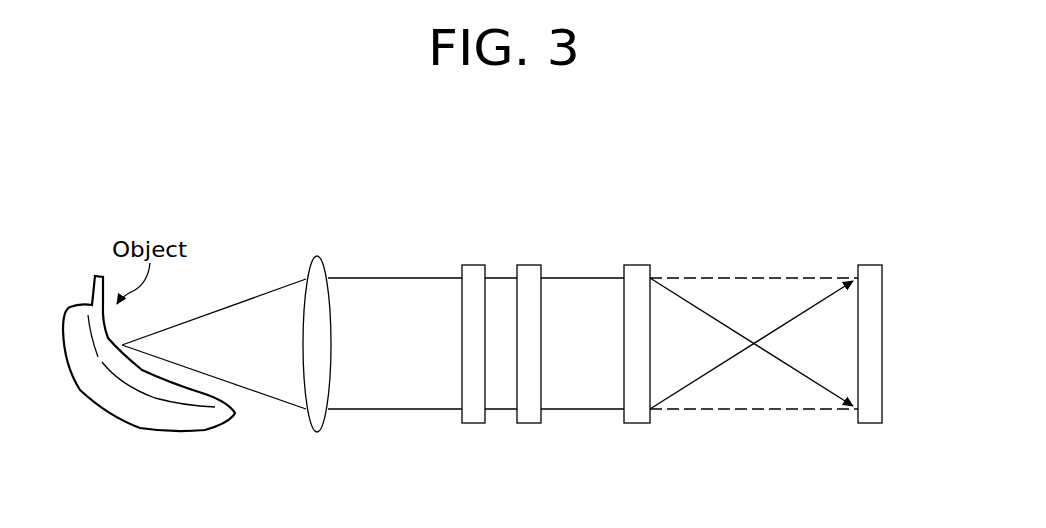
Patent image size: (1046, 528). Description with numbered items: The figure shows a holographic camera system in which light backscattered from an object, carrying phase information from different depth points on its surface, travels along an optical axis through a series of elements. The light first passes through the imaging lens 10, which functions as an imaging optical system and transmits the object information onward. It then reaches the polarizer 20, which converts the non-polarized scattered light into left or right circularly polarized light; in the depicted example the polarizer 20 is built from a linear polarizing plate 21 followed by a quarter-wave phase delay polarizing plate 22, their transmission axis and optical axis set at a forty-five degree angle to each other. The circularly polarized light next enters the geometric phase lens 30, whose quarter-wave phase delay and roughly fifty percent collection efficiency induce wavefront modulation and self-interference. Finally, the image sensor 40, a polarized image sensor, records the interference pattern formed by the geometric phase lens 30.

The imaging lens 10 is at (317, 256).
The polarizer 20 is at (502, 288).
The linear polarizing plate 21 is at (473, 264).
The second filter 22 is at (536, 307).
The geometric phase lens 30 is at (636, 264).
The image sensor 40 is at (870, 264).